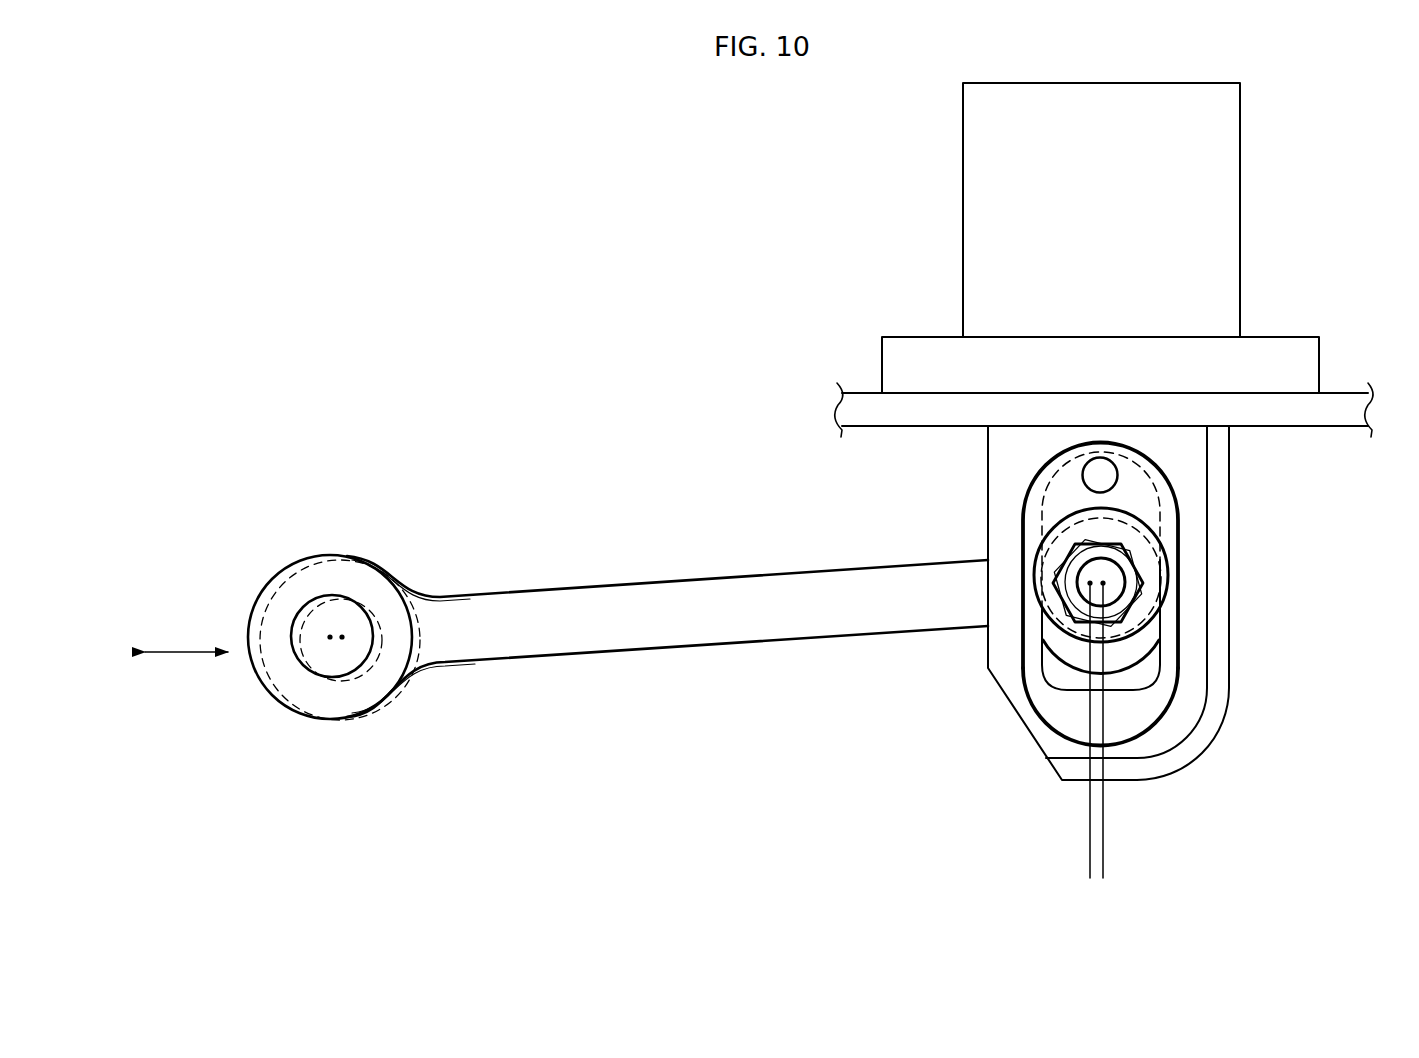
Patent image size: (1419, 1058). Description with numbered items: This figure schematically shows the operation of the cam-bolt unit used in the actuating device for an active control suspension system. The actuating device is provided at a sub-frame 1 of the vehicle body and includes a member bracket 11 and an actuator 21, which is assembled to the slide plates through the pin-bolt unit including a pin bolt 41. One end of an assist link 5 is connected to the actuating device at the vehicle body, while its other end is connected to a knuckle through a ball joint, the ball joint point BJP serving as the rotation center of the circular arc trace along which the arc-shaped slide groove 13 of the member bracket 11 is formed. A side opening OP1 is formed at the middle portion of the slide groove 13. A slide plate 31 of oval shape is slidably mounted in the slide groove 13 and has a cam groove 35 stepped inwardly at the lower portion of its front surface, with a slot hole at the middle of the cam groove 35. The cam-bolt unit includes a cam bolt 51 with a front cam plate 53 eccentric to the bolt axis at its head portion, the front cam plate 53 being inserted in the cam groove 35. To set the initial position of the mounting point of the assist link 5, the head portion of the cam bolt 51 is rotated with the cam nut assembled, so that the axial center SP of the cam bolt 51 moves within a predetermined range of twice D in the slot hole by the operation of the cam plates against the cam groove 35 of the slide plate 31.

The sub-frame 1 is at (1345, 400).
The actuator 21 is at (1225, 215).
The member bracket 11 is at (1221, 688).
The slide groove 13 is at (1028, 708).
The slide plate 31 is at (1170, 500).
The cam groove 35 is at (1072, 650).
The pin bolt 41 is at (1093, 476).
The cam bolt 51 is at (1117, 590).
The front cam plate 53 is at (1122, 578).
The assist link 5 is at (652, 613).
The ball joint point BJP is at (342, 641).
The axial center of the cam bolt SP is at (1090, 583).
The side opening OP1 is at (1142, 678).
The half of the predetermined range of movement D is at (1043, 833).